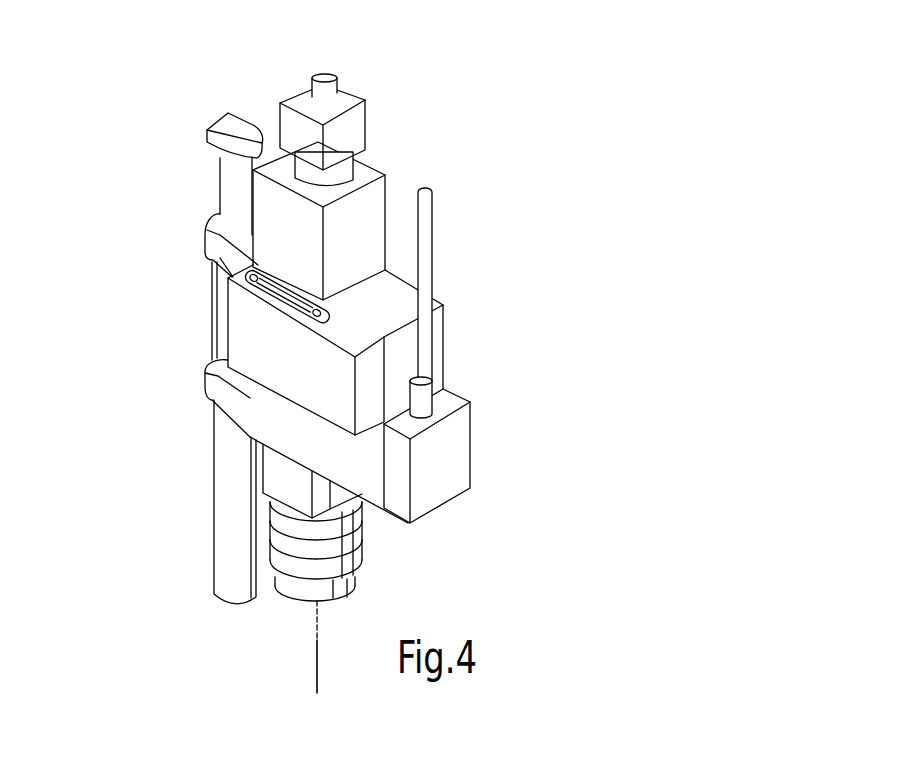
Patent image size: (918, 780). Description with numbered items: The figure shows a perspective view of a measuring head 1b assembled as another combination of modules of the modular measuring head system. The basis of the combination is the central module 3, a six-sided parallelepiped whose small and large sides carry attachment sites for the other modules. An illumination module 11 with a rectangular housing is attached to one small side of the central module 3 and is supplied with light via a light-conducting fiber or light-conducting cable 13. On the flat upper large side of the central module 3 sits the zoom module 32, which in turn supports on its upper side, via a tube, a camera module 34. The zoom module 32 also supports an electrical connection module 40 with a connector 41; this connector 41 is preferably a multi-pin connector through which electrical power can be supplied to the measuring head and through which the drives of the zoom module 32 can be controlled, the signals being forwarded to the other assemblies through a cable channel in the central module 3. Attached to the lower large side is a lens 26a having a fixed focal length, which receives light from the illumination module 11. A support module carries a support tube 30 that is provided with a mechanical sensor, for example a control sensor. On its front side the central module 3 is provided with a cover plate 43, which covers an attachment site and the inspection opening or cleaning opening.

The measuring head 1b is at (505, 142).
The central module 3 is at (270, 425).
The illumination module 11 is at (490, 416).
The light-conducting cable 13 is at (432, 232).
The lens 26a is at (363, 556).
The support tube 30 is at (213, 500).
The zoom module 32 is at (368, 210).
The camera module 34 is at (372, 110).
The electrical connection module 40 is at (250, 313).
The connector 41 is at (303, 310).
The cover plate 43 is at (358, 452).